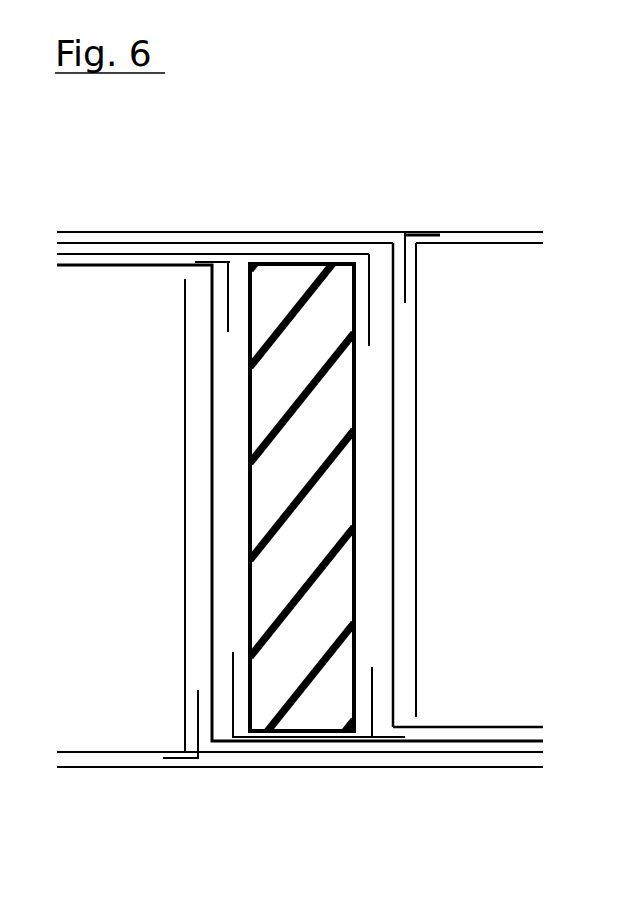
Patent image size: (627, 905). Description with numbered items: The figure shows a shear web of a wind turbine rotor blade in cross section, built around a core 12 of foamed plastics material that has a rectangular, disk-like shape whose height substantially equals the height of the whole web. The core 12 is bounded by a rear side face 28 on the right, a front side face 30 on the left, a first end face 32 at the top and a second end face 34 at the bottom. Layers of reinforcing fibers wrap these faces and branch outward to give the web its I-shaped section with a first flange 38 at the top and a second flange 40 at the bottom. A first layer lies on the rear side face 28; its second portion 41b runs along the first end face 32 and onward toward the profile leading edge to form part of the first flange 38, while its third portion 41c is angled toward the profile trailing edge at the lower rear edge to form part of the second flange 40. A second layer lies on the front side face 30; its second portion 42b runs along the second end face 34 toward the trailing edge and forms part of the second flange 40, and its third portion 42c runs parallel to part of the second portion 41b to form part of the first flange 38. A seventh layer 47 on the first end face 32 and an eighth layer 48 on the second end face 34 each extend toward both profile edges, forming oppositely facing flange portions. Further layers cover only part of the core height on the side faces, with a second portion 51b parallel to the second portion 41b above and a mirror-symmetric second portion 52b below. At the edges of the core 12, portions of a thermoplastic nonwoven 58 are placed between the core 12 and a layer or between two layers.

The core 12 is at (330, 492).
The rear side face 28 is at (357, 568).
The front side face 30 is at (248, 503).
The first end face 32 is at (295, 261).
The second end face 34 is at (300, 739).
The first flange 38 is at (110, 208).
The second flange 40 is at (490, 792).
The second portion of first layer 41b is at (352, 242).
The third portion of first layer 41c is at (490, 725).
The second portion of second layer 42b is at (362, 754).
The third portion of second layer 42c is at (103, 267).
The seventh layer 47 is at (215, 231).
The eighth layer 48 is at (123, 769).
The second portion of further first layer 51b is at (130, 253).
The second portion of further second layer 52b is at (450, 743).
The nonwoven 58 is at (408, 278).